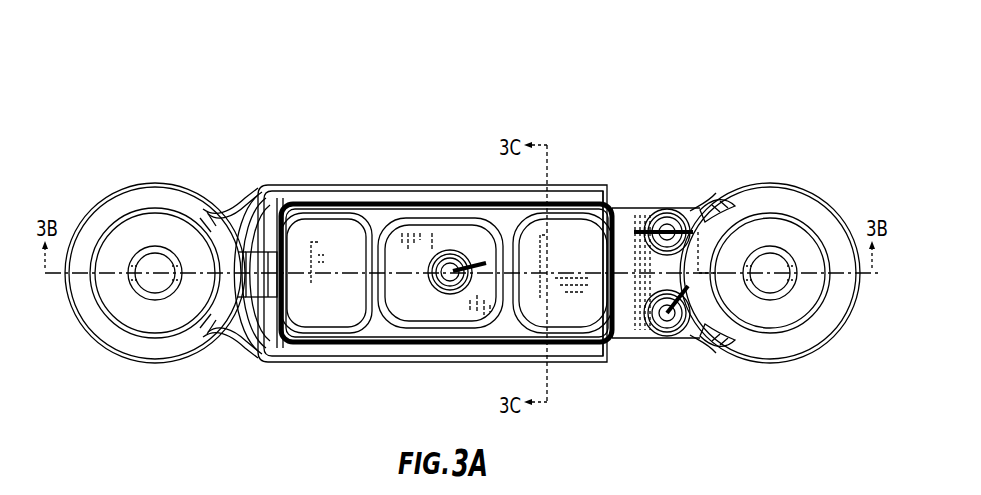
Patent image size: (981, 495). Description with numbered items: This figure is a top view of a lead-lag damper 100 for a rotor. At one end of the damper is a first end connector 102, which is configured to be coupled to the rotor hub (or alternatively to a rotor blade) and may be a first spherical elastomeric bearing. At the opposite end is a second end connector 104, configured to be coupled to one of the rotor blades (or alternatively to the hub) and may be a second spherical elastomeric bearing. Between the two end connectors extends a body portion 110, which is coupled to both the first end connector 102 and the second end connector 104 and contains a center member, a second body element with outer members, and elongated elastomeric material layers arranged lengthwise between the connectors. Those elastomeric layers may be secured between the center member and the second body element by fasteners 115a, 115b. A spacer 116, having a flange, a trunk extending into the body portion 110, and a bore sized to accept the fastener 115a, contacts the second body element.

The lead-lag damper 100 is at (252, 73).
The first end connector 102 is at (120, 184).
The second end connector 104 is at (797, 174).
The body portion 110 is at (437, 167).
The fastener 115a is at (452, 258).
The fasteners 115b is at (657, 216).
The spacer 116 is at (415, 296).